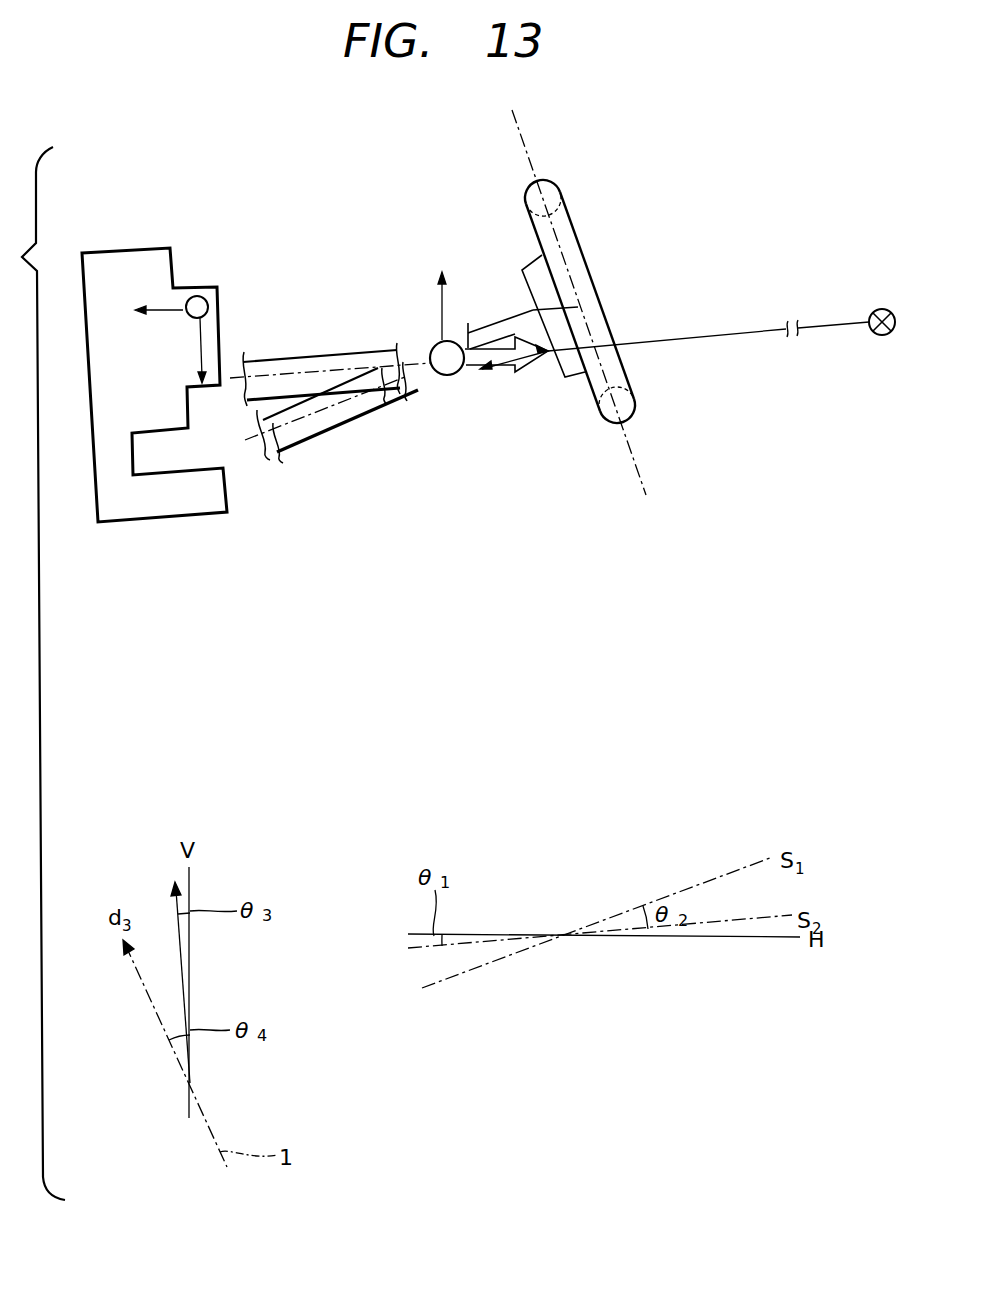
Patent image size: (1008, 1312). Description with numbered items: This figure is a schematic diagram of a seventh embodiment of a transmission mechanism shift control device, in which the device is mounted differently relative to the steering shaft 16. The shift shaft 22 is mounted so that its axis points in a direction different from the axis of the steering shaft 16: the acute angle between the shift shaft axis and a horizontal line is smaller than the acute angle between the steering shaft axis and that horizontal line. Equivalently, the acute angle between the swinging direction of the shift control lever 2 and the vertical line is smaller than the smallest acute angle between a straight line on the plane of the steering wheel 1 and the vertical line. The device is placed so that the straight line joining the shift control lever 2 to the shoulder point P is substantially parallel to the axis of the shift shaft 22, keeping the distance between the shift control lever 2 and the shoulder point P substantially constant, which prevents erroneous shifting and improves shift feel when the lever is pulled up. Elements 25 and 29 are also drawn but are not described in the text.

The steering wheel 1 is at (572, 227).
The shift control lever 2 is at (448, 376).
The steering shaft 16 is at (382, 407).
The shift shaft 22 is at (333, 350).
The pivot 25 is at (197, 296).
The instrument panel 29 is at (92, 468).
The shoulder point P is at (882, 335).